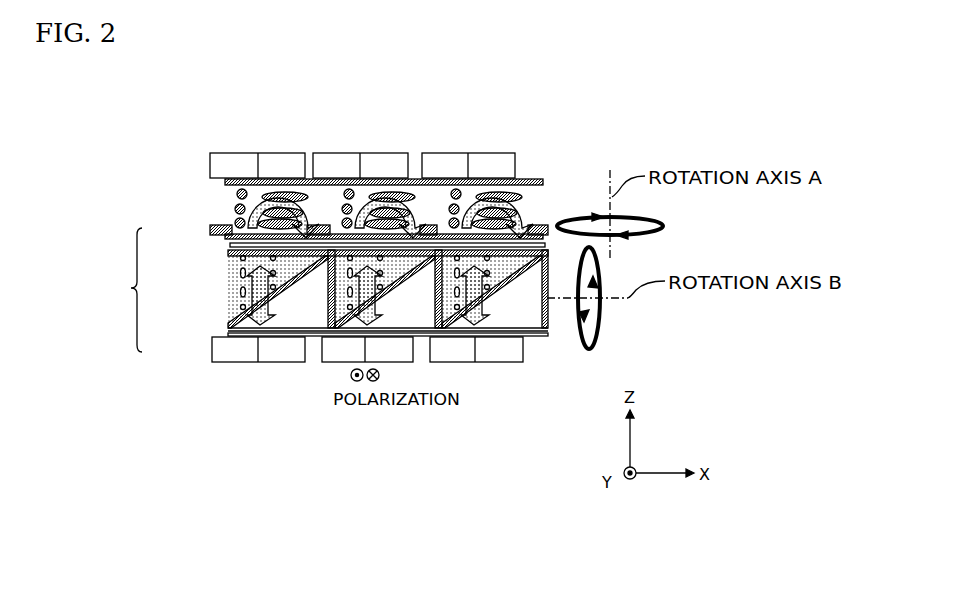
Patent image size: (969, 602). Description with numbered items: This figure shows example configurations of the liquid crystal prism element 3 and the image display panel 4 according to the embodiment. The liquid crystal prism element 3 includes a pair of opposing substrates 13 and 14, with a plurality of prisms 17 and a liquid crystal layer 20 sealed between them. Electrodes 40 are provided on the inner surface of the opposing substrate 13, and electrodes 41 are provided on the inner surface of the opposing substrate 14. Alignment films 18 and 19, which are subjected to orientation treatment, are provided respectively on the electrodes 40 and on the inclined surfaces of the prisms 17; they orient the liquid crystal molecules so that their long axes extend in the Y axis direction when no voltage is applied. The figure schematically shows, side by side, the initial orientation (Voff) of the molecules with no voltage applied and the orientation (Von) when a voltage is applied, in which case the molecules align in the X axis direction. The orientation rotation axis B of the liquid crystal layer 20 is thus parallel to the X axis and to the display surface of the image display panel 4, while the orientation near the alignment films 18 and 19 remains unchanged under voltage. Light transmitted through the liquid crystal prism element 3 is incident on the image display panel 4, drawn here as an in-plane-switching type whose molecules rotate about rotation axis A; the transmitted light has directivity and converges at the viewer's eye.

The liquid crystal prism element 3 is at (123, 297).
The image display panel 4 is at (206, 189).
The opposing substrate 13 is at (230, 238).
The opposing substrate 14 is at (230, 334).
The prisms 17 is at (318, 333).
The alignment film 18 is at (230, 323).
The alignment film 19 is at (230, 254).
The liquid crystal layer 20 is at (230, 300).
The electrodes 40 is at (232, 245).
The electrodes 41 is at (232, 331).